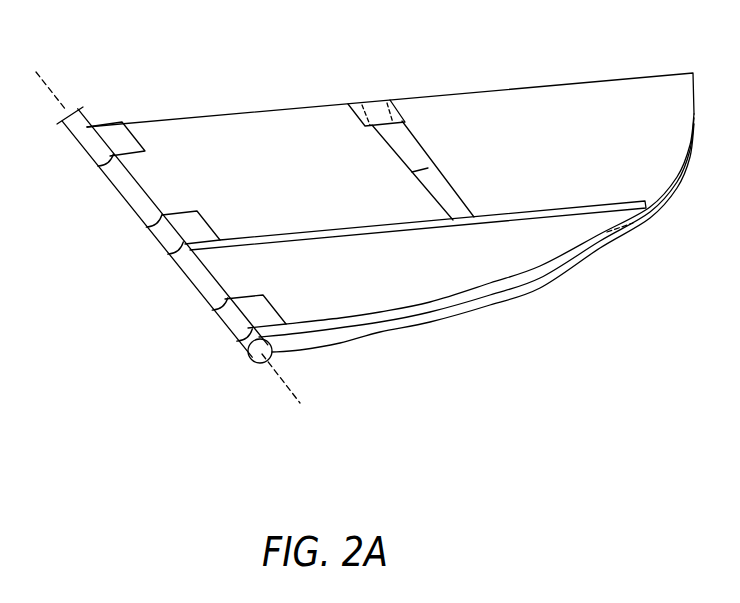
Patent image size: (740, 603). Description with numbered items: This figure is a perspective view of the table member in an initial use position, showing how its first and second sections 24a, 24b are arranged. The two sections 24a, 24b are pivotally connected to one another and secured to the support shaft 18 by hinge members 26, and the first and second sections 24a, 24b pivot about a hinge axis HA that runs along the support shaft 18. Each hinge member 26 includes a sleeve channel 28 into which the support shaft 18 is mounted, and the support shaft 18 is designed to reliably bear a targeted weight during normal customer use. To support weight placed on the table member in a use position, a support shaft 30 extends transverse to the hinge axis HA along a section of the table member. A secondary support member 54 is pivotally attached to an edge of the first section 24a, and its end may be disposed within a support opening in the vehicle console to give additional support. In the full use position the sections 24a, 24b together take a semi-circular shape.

The support shaft 18 is at (258, 355).
The hinge member 26 is at (112, 140).
The sleeve channel 28 is at (87, 145).
The first section 24a is at (557, 105).
The second section 24b is at (488, 300).
The support shaft 30 is at (560, 212).
The secondary support member 54 is at (416, 160).
The hinge axis HA is at (174, 243).